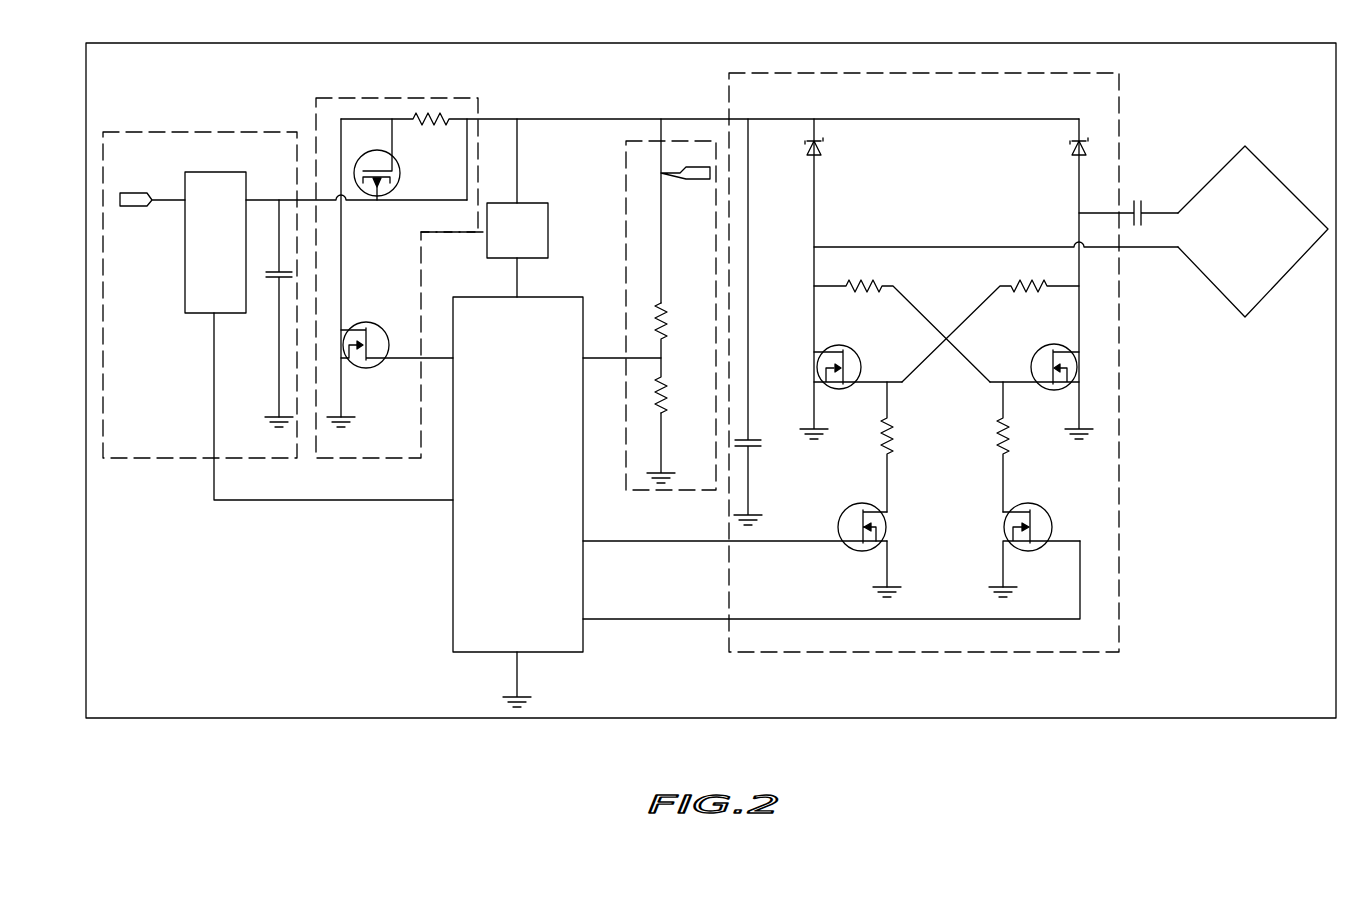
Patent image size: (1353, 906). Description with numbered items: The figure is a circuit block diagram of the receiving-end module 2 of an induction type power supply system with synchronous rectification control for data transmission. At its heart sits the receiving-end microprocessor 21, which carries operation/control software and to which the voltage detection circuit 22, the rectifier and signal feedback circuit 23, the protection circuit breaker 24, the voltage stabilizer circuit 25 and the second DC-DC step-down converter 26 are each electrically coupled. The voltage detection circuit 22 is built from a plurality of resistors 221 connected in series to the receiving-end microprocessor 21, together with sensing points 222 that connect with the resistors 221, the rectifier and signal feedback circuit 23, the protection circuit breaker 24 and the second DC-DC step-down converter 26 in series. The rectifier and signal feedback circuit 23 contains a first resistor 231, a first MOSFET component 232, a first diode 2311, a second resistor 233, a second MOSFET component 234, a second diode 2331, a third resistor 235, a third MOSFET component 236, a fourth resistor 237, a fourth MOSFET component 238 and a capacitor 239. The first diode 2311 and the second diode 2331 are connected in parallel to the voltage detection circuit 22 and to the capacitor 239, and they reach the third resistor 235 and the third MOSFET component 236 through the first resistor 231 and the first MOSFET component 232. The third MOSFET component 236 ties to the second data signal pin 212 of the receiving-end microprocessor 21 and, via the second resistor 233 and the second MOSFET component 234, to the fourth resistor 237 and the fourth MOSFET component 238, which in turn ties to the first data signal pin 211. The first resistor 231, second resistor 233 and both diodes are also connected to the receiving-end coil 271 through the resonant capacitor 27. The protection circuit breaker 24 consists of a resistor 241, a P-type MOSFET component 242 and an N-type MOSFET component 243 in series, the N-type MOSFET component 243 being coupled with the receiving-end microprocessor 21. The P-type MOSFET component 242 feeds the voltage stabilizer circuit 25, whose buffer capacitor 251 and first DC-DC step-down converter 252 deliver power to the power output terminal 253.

The receiving-end module 2 is at (1183, 702).
The receiving-end microprocessor 21 is at (570, 510).
The first data signal pin 211 is at (590, 615).
The second data signal pin 212 is at (585, 545).
The voltage detection circuit 22 is at (643, 142).
The resistors 221 is at (668, 330).
The sensing points 222 is at (692, 180).
The rectifier and signal feedback circuit 23 is at (1107, 478).
The first resistor 231 is at (1016, 290).
The first diode 2311 is at (1070, 149).
The first MOSFET component 232 is at (855, 352).
The second resistor 233 is at (847, 290).
The second diode 2331 is at (822, 149).
The second MOSFET component 234 is at (1035, 355).
The third resistor 235 is at (893, 432).
The third MOSFET component 236 is at (886, 530).
The fourth resistor 237 is at (1008, 432).
The fourth MOSFET component 238 is at (1005, 530).
The capacitor 239 is at (755, 450).
The protection circuit breaker 24 is at (357, 107).
The resistor 241 is at (433, 113).
The P-type MOSFET component 242 is at (400, 170).
The N-type MOSFET component 243 is at (369, 322).
The voltage stabilizer circuit 25 is at (228, 133).
The buffer capacitor 251 is at (278, 280).
The first DC-DC step-down converter 252 is at (185, 263).
The power output terminal 253 is at (134, 195).
The second DC-DC step-down converter 26 is at (535, 230).
The resonant capacitor 27 is at (1141, 210).
The receiving-end coil 271 is at (1263, 280).